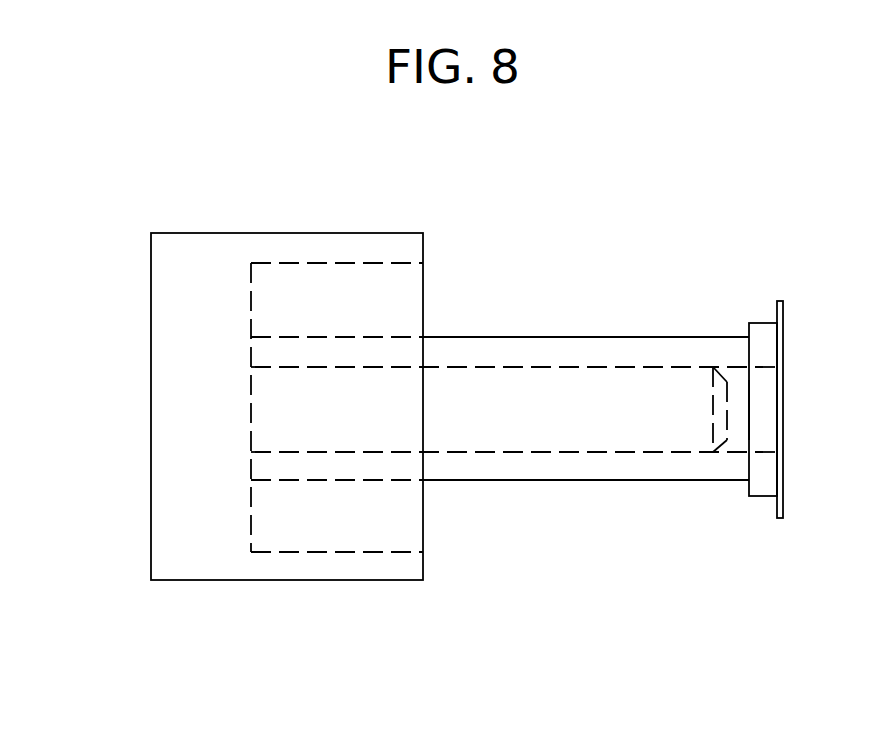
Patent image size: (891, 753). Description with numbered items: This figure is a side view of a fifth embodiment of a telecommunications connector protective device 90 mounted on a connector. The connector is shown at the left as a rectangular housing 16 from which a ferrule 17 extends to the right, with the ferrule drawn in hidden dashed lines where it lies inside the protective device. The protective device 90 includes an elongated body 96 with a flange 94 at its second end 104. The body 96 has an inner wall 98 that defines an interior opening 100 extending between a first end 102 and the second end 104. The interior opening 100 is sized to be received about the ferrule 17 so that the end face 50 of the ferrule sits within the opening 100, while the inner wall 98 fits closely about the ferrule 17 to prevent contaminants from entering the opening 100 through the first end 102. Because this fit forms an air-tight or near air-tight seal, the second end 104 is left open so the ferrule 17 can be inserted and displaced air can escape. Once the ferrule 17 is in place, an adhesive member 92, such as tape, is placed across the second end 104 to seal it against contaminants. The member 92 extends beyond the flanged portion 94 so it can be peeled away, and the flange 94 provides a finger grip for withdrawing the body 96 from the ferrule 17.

The housing 16 is at (178, 293).
The ferrule 17 is at (550, 411).
The end face 50 is at (720, 387).
The protective device 90 is at (630, 500).
The adhesive member 92 is at (782, 510).
The flange 94 is at (760, 482).
The body 96 is at (466, 467).
The inner wall 98 is at (737, 365).
The interior opening 100 is at (740, 418).
The first end 102 is at (251, 467).
The second end 104 is at (783, 355).